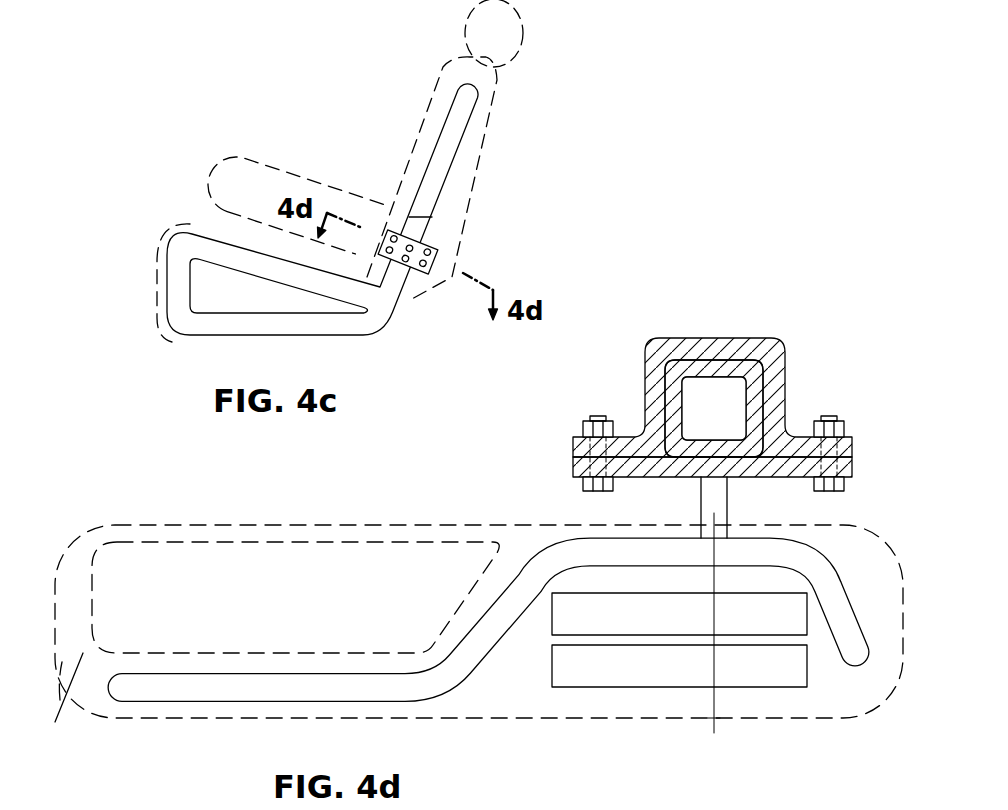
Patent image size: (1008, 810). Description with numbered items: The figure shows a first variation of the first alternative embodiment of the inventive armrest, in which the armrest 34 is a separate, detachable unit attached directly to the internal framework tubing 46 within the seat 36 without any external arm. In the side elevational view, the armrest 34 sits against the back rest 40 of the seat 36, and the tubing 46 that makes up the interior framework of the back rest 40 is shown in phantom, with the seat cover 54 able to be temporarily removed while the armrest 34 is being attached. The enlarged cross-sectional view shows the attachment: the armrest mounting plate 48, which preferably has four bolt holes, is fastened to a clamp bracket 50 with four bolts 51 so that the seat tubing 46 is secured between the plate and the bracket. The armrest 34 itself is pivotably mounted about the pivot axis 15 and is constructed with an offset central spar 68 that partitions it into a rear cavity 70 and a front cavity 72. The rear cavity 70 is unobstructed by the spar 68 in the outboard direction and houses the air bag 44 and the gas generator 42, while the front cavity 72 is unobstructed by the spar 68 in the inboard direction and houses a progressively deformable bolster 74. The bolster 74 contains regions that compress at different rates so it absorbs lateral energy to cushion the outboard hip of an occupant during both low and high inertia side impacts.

In FIG. 4d, the pivot axis 15 is at (714, 734).
In FIG. 4c, the armrest 34 is at (278, 172).
In FIG. 4d, the armrest 34 is at (248, 523).
In FIG. 4c, the seat 36 is at (352, 188).
In FIG. 4c, the back rest 40 is at (483, 145).
In FIG. 4d, the gas generator 42 is at (628, 629).
In FIG. 4d, the air bag 44 is at (678, 682).
In FIG. 4c, the tubing 46 is at (450, 173).
In FIG. 4d, the tubing 46 is at (747, 396).
In FIG. 4c, the mounting plate 48 is at (428, 277).
In FIG. 4d, the mounting plate 48 is at (672, 472).
In FIG. 4d, the clamp bracket 50 is at (767, 340).
In FIG. 4d, the bolts 51 is at (600, 418).
In FIG. 4c, the seat cover 54 is at (498, 110).
In FIG. 4d, the central spar 68 is at (483, 637).
In FIG. 4d, the rear cavity 70 is at (488, 698).
In FIG. 4d, the front cavity 72 is at (60, 706).
In FIG. 4d, the bolster 74 is at (340, 542).